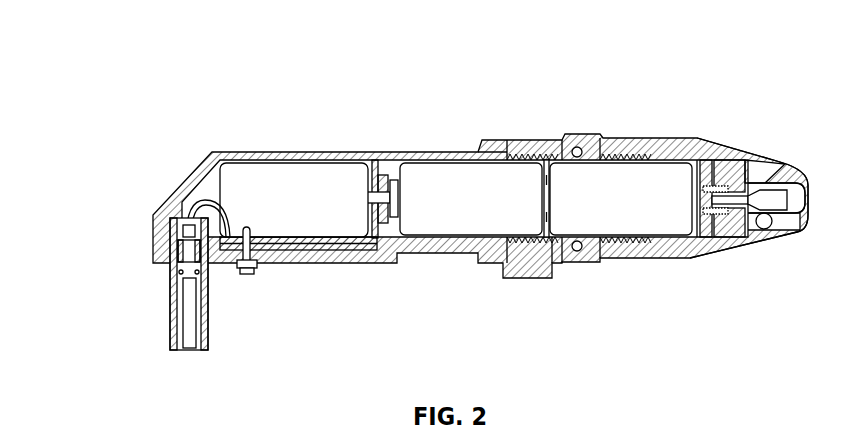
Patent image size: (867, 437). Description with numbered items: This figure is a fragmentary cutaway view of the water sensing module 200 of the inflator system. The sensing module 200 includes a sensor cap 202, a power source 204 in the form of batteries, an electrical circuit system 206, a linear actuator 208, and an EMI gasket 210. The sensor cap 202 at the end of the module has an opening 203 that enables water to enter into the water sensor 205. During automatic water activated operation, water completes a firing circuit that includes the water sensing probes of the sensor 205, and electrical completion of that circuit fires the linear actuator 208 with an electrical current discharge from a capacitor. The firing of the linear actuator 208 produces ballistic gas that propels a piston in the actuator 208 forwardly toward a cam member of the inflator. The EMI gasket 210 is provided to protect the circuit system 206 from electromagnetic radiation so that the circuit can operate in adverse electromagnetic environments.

The sensing module 200 is at (167, 62).
The sensor cap 202 is at (735, 252).
The opening 203 is at (803, 198).
The power source 204 is at (634, 174).
The water sensor 205 is at (755, 177).
The electrical circuit system 206 is at (309, 178).
The linear actuator 208 is at (170, 310).
The EMI gasket 210 is at (320, 258).